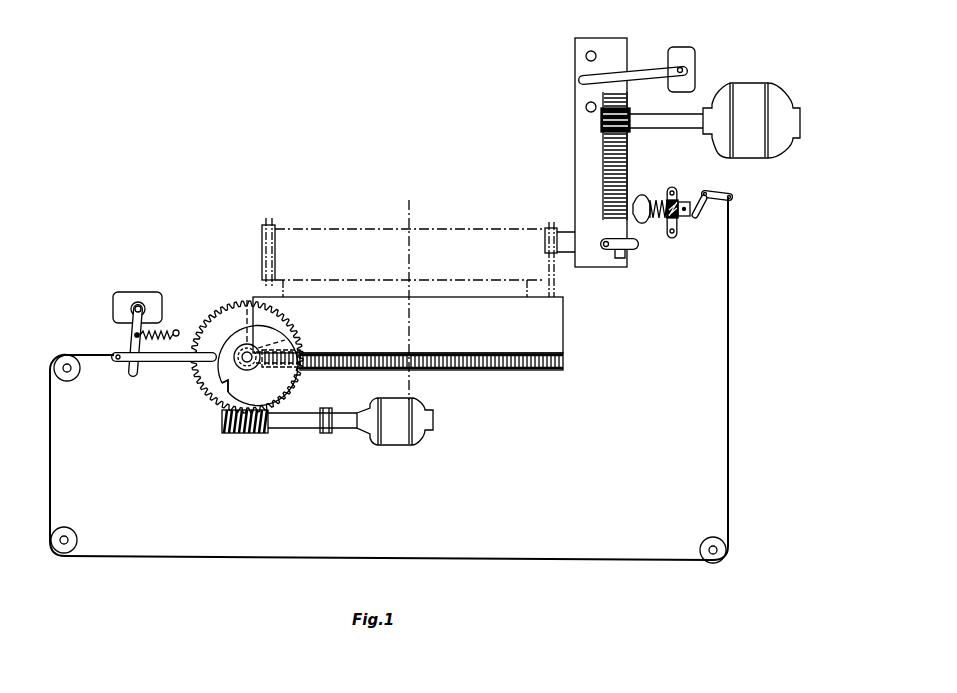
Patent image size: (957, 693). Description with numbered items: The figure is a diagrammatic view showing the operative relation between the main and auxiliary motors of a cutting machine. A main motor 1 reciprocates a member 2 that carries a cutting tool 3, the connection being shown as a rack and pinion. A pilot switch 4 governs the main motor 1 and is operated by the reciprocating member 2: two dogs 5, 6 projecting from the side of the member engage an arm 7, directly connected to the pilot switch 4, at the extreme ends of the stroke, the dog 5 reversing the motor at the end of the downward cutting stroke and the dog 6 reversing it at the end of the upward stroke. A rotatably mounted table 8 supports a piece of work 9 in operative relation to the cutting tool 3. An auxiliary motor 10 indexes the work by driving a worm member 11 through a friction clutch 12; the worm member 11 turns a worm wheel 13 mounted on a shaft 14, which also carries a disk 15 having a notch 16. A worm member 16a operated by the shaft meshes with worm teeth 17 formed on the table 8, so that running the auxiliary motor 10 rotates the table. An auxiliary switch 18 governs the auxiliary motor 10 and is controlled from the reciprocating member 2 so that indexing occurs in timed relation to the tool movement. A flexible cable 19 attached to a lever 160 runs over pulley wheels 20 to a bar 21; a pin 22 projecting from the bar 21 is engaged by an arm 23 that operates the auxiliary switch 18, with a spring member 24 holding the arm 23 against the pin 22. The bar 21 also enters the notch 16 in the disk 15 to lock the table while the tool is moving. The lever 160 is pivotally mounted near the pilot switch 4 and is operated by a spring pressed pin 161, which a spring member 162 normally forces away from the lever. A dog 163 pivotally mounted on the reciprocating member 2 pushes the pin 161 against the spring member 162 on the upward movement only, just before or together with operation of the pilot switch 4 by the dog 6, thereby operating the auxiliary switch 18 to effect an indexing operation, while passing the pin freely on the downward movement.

The main motor 1 is at (752, 92).
The reciprocating member 2 is at (575, 154).
The cutting tool 3 is at (557, 236).
The pilot switch 4 is at (690, 76).
The dog 5 is at (586, 56).
The dog 6 is at (586, 107).
The arm 7 is at (644, 72).
The table 8 is at (563, 325).
The piece of work 9 is at (558, 276).
The auxiliary motor 10 is at (388, 440).
The worm member 11 is at (250, 434).
The friction clutch 12 is at (322, 434).
The worm wheel 13 is at (208, 398).
The shaft 14 is at (249, 366).
The disk 15 is at (225, 316).
The notch 16 is at (222, 378).
The worm member 16a is at (286, 330).
The worm teeth 17 is at (563, 364).
The auxiliary switch 18 is at (152, 291).
The flexible cable 19 is at (728, 362).
The pulley wheels 20 is at (70, 381).
The bar 21 is at (168, 362).
The pin 22 is at (135, 372).
The arm 23 is at (134, 336).
The spring member 24 is at (158, 330).
The lever 160 is at (716, 192).
The spring pressed pin 161 is at (646, 196).
The spring member 162 is at (671, 222).
The dog 163 is at (630, 250).